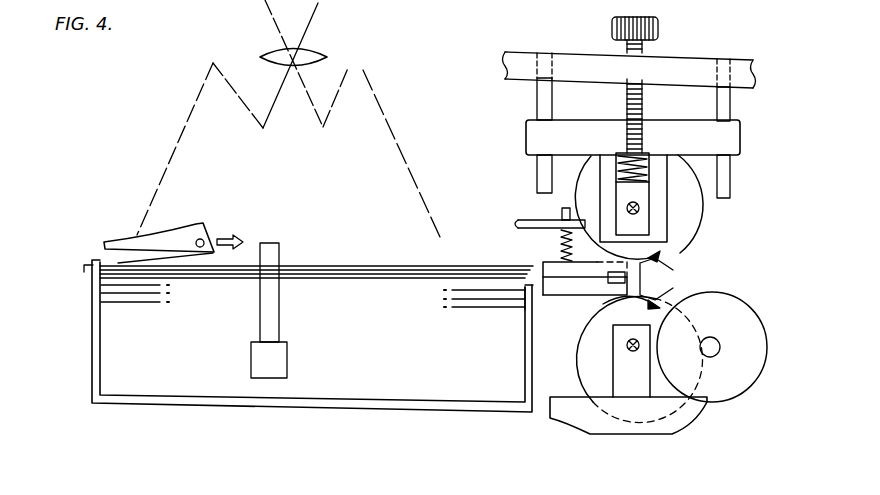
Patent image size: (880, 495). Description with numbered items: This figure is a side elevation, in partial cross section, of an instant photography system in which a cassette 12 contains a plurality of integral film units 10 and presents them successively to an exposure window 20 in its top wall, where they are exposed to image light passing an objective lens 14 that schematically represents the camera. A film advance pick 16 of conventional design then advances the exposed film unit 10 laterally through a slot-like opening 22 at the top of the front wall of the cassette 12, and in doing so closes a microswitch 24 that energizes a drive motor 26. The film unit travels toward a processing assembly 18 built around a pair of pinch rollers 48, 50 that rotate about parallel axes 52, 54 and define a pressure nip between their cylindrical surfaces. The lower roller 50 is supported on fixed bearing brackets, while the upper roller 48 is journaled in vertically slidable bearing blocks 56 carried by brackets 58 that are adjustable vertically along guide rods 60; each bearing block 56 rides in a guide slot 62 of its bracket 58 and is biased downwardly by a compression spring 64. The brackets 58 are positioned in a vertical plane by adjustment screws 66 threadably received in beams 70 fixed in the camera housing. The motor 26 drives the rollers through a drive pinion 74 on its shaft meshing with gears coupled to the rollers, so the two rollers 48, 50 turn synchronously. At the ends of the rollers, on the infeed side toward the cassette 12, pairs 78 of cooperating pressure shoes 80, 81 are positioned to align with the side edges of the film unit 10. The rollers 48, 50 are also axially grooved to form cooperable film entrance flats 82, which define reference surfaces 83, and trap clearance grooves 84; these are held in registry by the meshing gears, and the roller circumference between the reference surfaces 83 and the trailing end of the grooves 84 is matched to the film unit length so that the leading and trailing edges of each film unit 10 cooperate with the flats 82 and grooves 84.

The integral film unit 10 is at (100, 276).
The cassette 12 is at (244, 417).
The objective lens 14 is at (320, 57).
The film advance pick 16 is at (152, 223).
The film unit processing assembly 18 is at (747, 256).
The exposure window 20 is at (373, 266).
The slot-like opening 22 is at (540, 280).
The microswitch 24 is at (270, 303).
The drive motor 26 is at (731, 326).
The upper pinch roller 48 is at (698, 220).
The lower pinch roller 50 is at (690, 359).
The axis of upper roller 52 is at (639, 212).
The axis of lower roller 54 is at (633, 352).
The bearing block 56 is at (642, 190).
The bracket 58 is at (738, 148).
The guide rod 60 is at (540, 178).
The guide slot 62 is at (602, 149).
The compression spring 64 is at (650, 130).
The adjustment screw 66 is at (643, 52).
The beam 70 is at (677, 73).
The drive pinion 74 is at (718, 355).
The pair of pressure shoes 78 is at (570, 302).
The pressure shoe 80 is at (547, 240).
The pressure shoe 81 is at (538, 309).
The film entrance flat 82 is at (615, 284).
The reference surface 83 is at (660, 292).
The trap clearance groove 84 is at (672, 268).